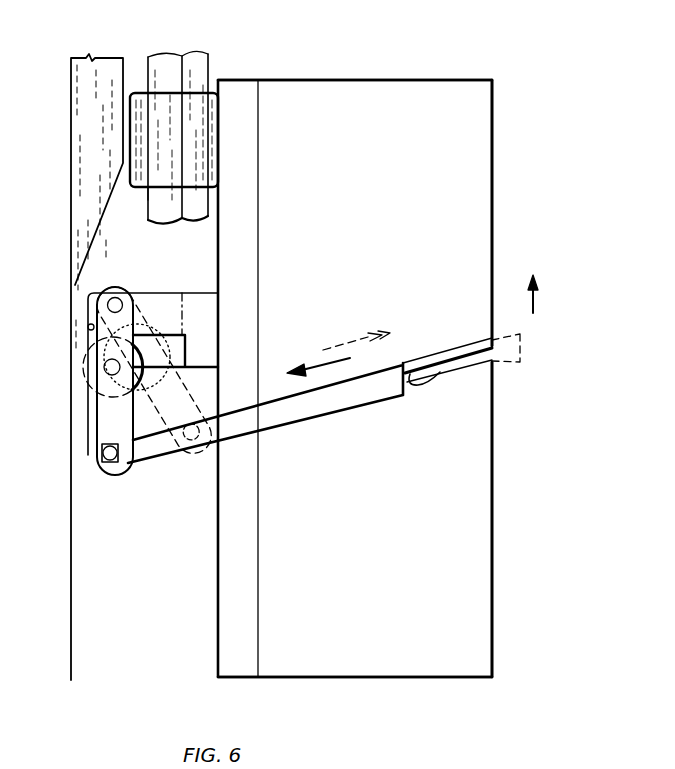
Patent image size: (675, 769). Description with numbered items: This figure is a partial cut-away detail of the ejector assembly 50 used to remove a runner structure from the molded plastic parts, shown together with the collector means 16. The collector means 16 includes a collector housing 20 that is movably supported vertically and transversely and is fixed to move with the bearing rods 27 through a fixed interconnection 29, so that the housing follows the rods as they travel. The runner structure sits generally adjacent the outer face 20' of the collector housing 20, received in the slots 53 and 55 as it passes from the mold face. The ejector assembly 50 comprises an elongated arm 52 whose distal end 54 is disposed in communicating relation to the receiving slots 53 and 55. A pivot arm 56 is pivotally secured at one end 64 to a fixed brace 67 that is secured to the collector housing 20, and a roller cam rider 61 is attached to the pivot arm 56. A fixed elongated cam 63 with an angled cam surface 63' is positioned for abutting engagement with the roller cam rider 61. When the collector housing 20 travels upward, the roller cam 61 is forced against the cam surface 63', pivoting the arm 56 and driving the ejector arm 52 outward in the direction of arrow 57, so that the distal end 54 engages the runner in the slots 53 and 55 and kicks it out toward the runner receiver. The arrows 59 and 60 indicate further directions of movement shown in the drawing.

The collector means 16 is at (427, 68).
The collector housing 20 is at (355, 360).
The outer face 20' is at (384, 378).
The bearing rods 27 is at (205, 52).
The fixed interconnection 29 is at (216, 76).
The ejector assembly 50 is at (62, 408).
The elongated arm 52 is at (330, 418).
The receiving slot 53 is at (433, 373).
The distal end 54 is at (407, 363).
The receiving slot 55 is at (127, 463).
The pivot arm 56 is at (90, 437).
The directional arrow 57 is at (357, 320).
The direction arrow 59 is at (314, 362).
The direction arrow 60 is at (533, 313).
The roller cam rider 61 is at (92, 373).
The fixed elongated cam 63 is at (102, 367).
The angled cam surface 63' is at (130, 206).
The pivot end 64 is at (119, 299).
The fixed brace 67 is at (167, 293).